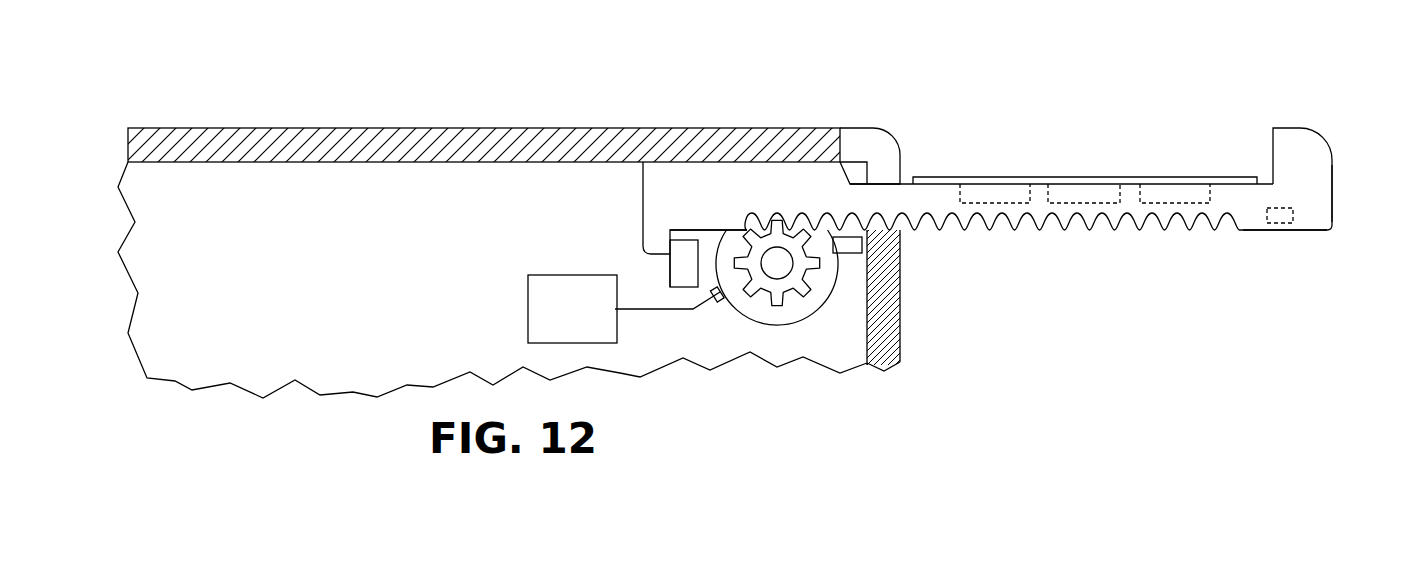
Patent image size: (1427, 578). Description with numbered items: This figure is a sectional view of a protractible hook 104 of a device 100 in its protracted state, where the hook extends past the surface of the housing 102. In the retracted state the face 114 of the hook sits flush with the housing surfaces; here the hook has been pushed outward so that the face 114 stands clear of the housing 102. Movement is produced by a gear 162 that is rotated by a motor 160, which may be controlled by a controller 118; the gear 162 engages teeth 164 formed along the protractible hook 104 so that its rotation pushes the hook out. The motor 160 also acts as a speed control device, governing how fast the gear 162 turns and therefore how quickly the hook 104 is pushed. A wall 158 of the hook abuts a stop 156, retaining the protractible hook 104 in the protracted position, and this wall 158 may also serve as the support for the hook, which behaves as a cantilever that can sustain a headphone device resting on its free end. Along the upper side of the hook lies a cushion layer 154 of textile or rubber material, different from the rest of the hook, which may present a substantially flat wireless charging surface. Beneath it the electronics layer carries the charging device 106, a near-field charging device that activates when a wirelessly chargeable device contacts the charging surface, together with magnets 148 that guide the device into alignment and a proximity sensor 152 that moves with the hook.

The electronic device 100 is at (670, 75).
The housing 102 is at (337, 128).
The protractible hook 104 is at (1362, 140).
The charging device 106 is at (1050, 195).
The face 114 is at (1333, 195).
The controller 118 is at (862, 245).
The magnet 148 is at (962, 195).
The proximity sensor 152 is at (1283, 230).
The cushion layer 154 is at (1193, 178).
The stop 156 is at (683, 288).
The wall 158 is at (680, 240).
The motor 160 is at (553, 323).
The gear 162 is at (785, 302).
The teeth 164 is at (1060, 231).